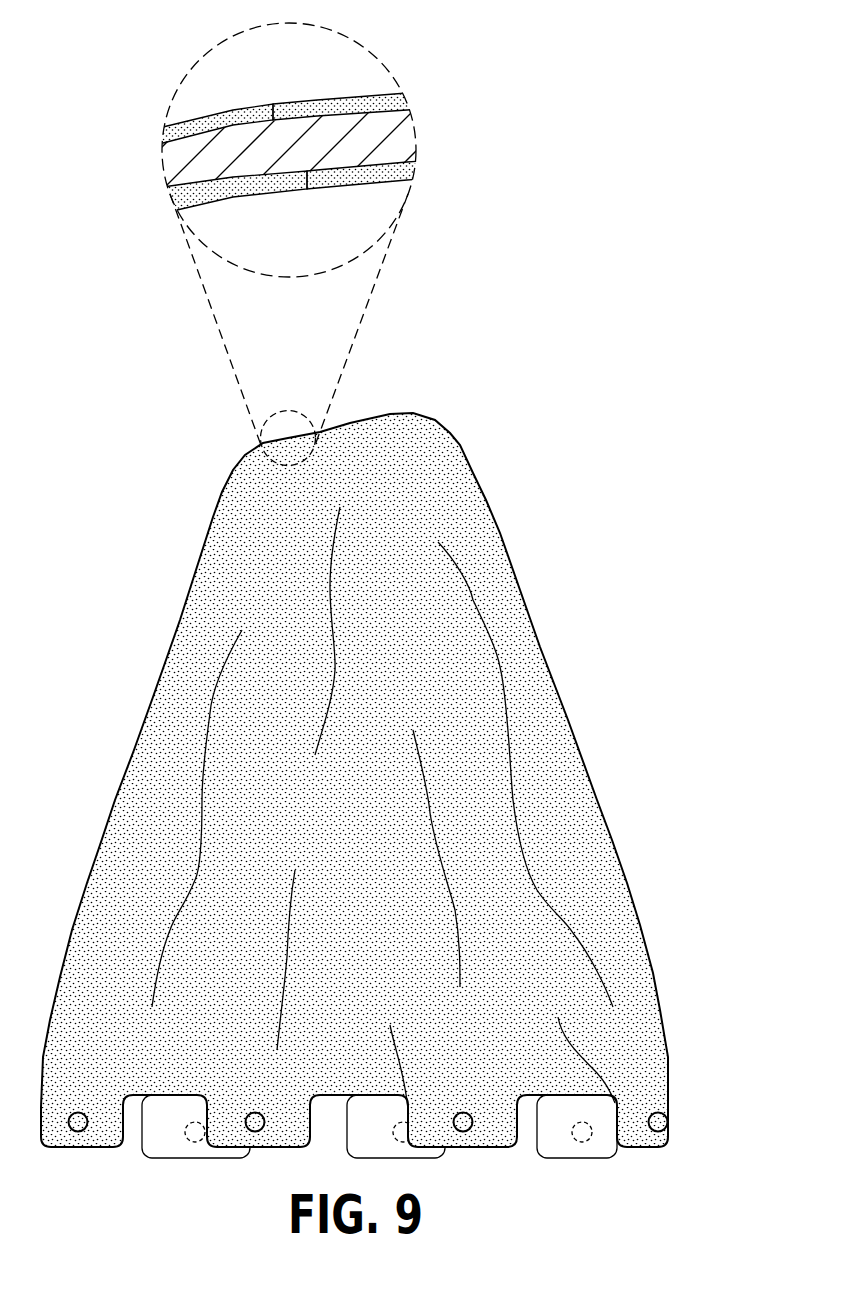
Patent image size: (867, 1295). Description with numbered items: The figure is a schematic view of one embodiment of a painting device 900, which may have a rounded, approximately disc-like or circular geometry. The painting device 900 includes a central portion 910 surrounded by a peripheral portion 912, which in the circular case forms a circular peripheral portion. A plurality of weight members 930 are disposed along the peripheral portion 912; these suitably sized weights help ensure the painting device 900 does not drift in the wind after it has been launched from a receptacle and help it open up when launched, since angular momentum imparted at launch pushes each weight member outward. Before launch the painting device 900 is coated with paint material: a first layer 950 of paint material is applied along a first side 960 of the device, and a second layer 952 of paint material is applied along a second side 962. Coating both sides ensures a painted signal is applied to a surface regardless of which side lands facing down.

The painting device 900 is at (410, 596).
The central portion 910 is at (462, 475).
The peripheral portion 912 is at (640, 1037).
The weight members 930 is at (683, 1128).
The first layer 950 is at (306, 104).
The second layer 952 is at (277, 198).
The first side 960 is at (272, 106).
The second side 962 is at (313, 190).